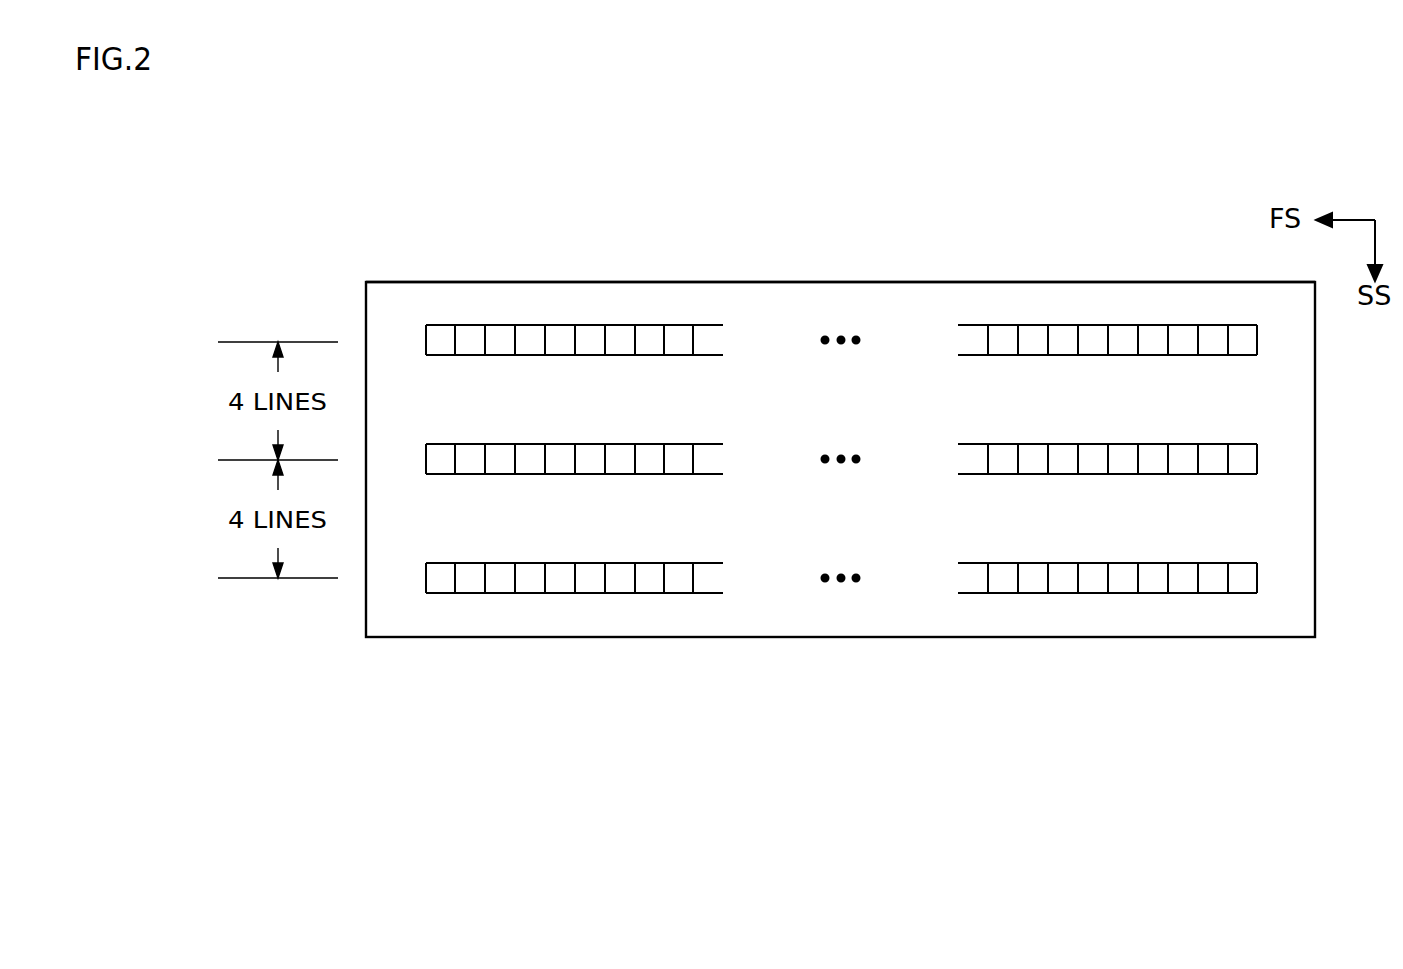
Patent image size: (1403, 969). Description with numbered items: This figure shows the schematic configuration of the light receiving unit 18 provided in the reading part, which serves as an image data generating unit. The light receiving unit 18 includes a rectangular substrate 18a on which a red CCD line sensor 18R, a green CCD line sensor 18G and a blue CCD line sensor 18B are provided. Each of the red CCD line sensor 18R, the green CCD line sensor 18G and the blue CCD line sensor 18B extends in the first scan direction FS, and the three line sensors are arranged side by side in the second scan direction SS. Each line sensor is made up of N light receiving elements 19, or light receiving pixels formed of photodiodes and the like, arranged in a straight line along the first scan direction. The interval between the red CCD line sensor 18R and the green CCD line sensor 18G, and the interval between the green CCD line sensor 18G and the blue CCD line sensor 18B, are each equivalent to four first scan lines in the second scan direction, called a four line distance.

The light receiving unit 18 is at (404, 242).
The rectangular substrate 18a is at (1137, 296).
The red CCD line sensor 18R is at (1284, 340).
The green CCD line sensor 18G is at (1284, 460).
The blue CCD line sensor 18B is at (1284, 578).
The light receiving element 19 is at (679, 577).